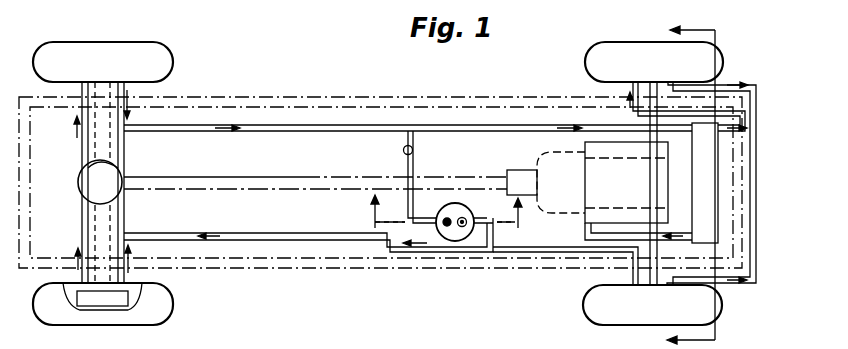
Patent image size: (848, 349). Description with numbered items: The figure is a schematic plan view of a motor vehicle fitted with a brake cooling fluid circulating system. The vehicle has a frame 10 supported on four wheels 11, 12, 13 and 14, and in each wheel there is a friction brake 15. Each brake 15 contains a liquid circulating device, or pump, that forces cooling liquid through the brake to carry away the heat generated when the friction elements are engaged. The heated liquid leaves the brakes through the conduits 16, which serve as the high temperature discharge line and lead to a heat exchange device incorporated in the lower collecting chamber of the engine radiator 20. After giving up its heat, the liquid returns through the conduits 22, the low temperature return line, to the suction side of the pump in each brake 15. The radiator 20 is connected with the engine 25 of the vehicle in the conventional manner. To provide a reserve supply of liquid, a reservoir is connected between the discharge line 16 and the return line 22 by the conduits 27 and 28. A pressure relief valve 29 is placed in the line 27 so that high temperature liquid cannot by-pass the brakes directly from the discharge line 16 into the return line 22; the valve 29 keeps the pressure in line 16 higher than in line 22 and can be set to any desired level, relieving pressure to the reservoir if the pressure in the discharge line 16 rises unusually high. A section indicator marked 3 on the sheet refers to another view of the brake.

The frame 10 is at (322, 97).
The wheel 11 is at (163, 60).
The wheel 12 is at (160, 302).
The wheel 13 is at (590, 55).
The wheel 14 is at (614, 318).
The friction brake 15 is at (100, 300).
The conduit 16 is at (455, 125).
The engine radiator 20 is at (692, 168).
The conduit 22 is at (82, 227).
The engine 25 is at (539, 165).
The conduit 27 is at (413, 170).
The conduit 28 is at (503, 235).
The pressure relief valve 29 is at (403, 150).
The section line 3 is at (371, 336).